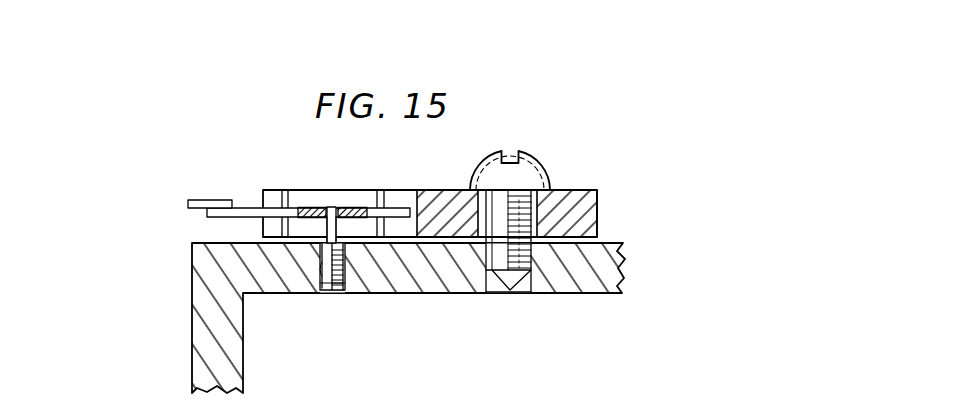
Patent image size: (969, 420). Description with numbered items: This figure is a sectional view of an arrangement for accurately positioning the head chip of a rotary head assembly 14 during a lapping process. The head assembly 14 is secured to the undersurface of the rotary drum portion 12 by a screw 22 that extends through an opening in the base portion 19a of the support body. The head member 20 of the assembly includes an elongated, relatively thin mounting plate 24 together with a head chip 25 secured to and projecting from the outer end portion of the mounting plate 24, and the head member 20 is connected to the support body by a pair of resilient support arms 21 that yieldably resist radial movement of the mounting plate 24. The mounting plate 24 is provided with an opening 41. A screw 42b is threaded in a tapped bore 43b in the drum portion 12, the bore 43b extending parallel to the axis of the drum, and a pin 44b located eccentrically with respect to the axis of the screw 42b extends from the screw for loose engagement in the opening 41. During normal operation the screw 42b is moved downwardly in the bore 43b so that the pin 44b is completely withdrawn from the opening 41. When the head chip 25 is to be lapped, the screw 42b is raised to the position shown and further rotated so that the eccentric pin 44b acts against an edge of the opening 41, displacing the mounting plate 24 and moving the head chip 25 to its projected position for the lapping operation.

The drum portion 12 is at (193, 284).
The rotary head assembly 14 is at (536, 206).
The base portion 19a is at (583, 213).
The head member 20 is at (245, 192).
The resilient support arms 21 is at (283, 192).
The screw 22 is at (543, 168).
The mounting plate 24 is at (215, 217).
The head chip 25 is at (190, 200).
The opening 41 is at (340, 207).
The screw 42b is at (337, 297).
The tapped bore 43b is at (327, 262).
The pin 44b is at (336, 226).